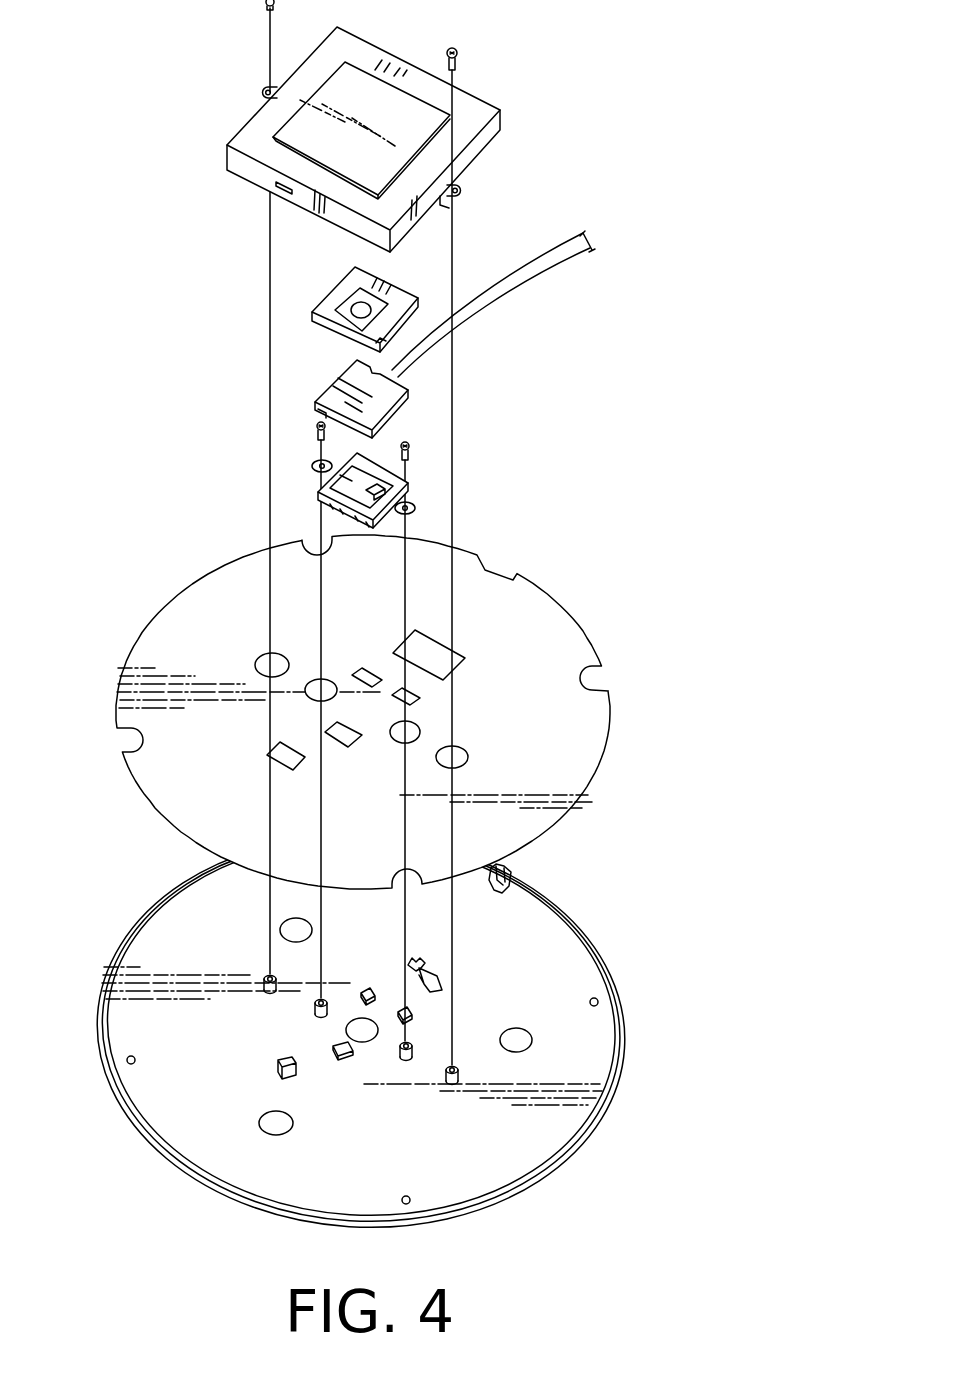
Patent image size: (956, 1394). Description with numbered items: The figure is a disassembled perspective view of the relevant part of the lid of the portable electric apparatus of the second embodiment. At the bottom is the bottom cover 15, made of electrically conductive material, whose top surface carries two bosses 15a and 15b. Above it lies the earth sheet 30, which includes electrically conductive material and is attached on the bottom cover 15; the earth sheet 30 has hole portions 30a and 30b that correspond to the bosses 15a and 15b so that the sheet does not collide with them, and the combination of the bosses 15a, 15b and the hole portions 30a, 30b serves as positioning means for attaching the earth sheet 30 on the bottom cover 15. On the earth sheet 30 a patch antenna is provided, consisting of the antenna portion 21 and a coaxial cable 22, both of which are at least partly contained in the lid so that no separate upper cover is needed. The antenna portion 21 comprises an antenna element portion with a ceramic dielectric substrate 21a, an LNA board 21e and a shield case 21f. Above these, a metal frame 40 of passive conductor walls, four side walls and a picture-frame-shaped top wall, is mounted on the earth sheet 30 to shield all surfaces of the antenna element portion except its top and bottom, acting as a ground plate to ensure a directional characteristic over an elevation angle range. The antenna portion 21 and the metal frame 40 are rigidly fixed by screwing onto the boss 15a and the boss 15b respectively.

The metal frame 40 is at (487, 140).
The coaxial cable 22 is at (523, 273).
The antenna portion 21 is at (450, 409).
The dielectric substrate 21a is at (407, 327).
The LNA board 21e is at (400, 408).
The shield case 21f is at (420, 494).
The earth sheet 30 is at (395, 712).
The hole portion 30a is at (420, 730).
The hole portion 30b is at (468, 757).
The bottom cover 15 is at (361, 1032).
The boss 15a is at (412, 1053).
The boss 15b is at (457, 1078).